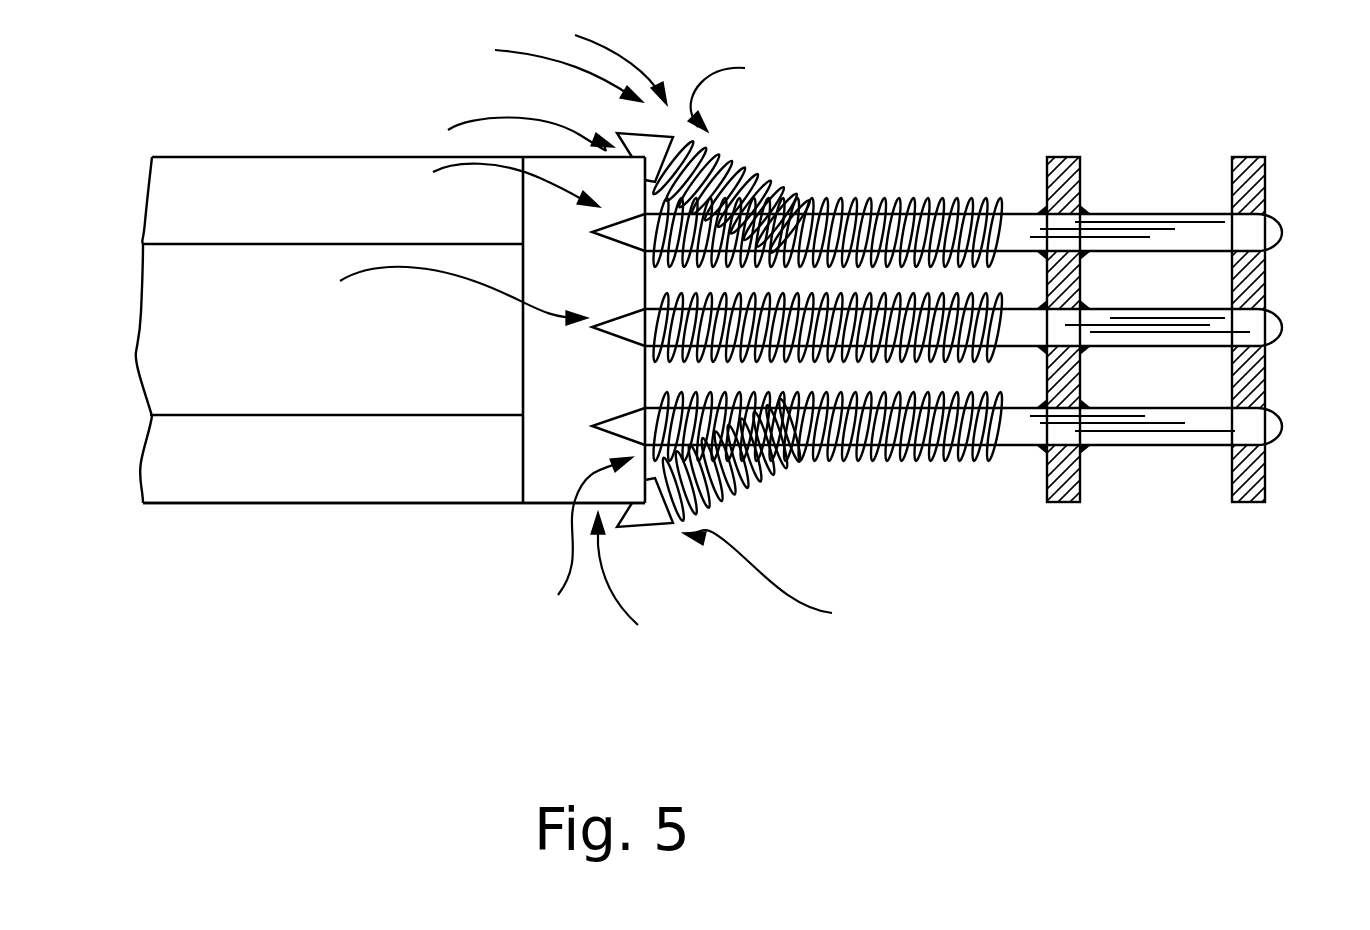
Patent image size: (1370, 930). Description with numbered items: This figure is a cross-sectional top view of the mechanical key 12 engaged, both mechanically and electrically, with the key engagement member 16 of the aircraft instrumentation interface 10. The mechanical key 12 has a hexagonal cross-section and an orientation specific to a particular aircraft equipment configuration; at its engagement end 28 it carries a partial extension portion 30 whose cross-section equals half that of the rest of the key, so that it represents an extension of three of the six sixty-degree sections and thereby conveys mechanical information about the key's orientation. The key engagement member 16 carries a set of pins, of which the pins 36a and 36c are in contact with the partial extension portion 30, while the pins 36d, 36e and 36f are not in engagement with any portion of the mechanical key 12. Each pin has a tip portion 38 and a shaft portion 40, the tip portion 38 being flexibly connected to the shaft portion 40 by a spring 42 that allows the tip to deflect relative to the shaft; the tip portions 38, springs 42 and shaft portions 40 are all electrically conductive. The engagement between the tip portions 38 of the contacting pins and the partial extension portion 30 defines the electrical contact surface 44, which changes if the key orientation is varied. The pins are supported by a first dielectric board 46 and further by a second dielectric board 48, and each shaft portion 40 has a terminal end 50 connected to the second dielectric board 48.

The aircraft instrumentation interface 10 is at (547, 65).
The mechanical key 12 is at (175, 291).
The key engagement member 16 is at (598, 54).
The engagement end 28 is at (352, 528).
The partial extension portion 30 is at (561, 480).
The pin 36a is at (749, 91).
The pin 36c is at (789, 583).
The pin 36d is at (579, 550).
The pin 36e is at (437, 296).
The pin 36f is at (484, 185).
The tip portion 38 is at (658, 145).
The shaft portion 40 is at (1153, 243).
The spring 42 is at (787, 193).
The electrical contact surface 44 is at (541, 385).
The first dielectric board 46 is at (1060, 488).
The second dielectric board 48 is at (1255, 490).
The terminal end 50 is at (1280, 233).